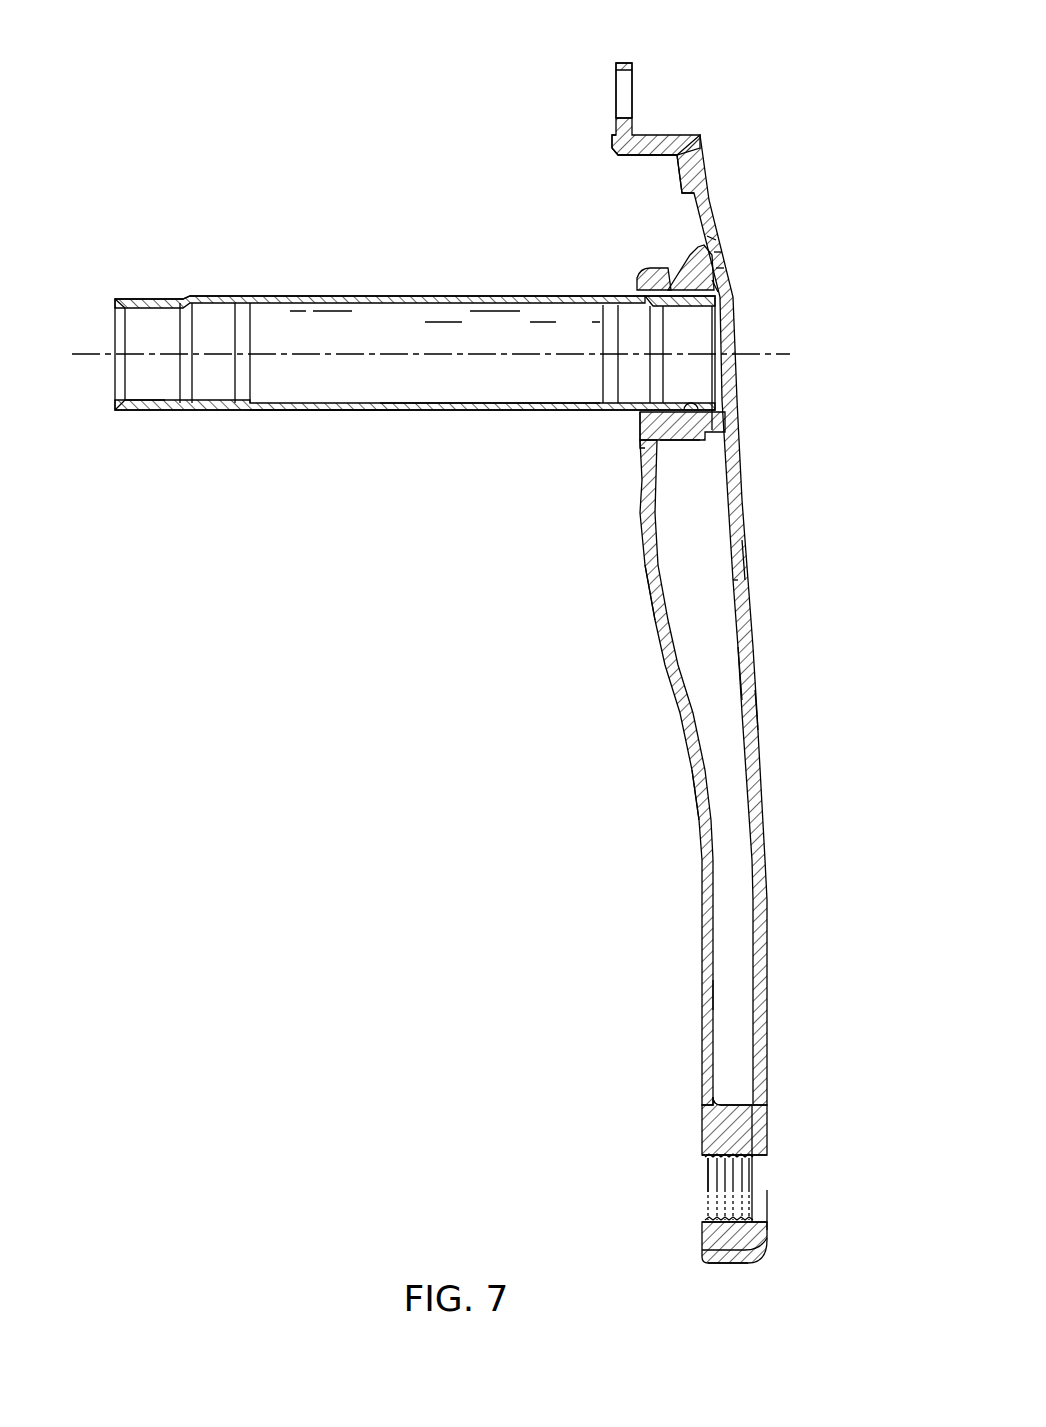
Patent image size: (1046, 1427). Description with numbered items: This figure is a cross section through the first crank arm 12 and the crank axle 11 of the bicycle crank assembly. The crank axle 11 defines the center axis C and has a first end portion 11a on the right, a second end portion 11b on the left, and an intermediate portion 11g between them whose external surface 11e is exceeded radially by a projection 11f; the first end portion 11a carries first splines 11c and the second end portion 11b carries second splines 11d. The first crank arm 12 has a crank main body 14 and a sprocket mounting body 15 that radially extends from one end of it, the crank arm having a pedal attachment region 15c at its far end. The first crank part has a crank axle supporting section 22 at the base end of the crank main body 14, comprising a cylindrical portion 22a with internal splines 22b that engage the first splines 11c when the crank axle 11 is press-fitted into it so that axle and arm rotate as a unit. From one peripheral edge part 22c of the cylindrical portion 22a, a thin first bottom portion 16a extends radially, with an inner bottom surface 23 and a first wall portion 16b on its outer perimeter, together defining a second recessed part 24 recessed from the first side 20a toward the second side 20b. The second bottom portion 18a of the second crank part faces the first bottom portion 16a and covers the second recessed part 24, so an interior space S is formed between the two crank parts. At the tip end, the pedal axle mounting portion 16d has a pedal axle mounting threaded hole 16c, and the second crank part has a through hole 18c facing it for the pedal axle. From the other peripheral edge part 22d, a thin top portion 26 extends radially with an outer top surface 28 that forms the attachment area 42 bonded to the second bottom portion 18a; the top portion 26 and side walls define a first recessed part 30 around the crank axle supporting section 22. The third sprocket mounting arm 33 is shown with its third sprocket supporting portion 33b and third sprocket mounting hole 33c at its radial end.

The crank axle 11 is at (385, 287).
The first end portion 11a is at (682, 268).
The second end portion 11b is at (138, 288).
The first splines 11c is at (646, 446).
The second splines 11d is at (165, 412).
The external surface 11e is at (398, 413).
The projection 11f is at (726, 421).
The intermediate portion 11g is at (315, 414).
The first crank arm 12 is at (690, 83).
The crank main body 14 is at (785, 829).
The sprocket mounting body 15 is at (768, 325).
The pedal attachment portion 15c is at (602, 93).
The first bottom portion 16a is at (686, 766).
The first wall portion 16b is at (710, 652).
The pedal axle mounting threaded hole 16c is at (714, 1218).
The pedal axle mounting portion 16d is at (698, 1242).
The second bottom portion 18a is at (749, 521).
The through hole 18c is at (760, 1210).
The first side 20a is at (768, 709).
The second side 20b is at (642, 687).
The crank axle supporting section 22 is at (705, 444).
The cylindrical portion 22a is at (652, 268).
The internal splines 22b is at (672, 442).
The peripheral edge part 22c is at (632, 420).
The peripheral edge part 22d is at (726, 282).
The inner bottom surface 23 is at (716, 999).
The second recessed part 24 is at (735, 1082).
The top portion 26 is at (720, 238).
The outer top surface 28 is at (722, 252).
The first recessed part 30 is at (642, 200).
The third sprocket mounting arm 33 is at (624, 58).
The third sprocket supporting portion 33b is at (648, 133).
The third sprocket mounting hole 33c is at (628, 88).
The attachment area 42 is at (726, 268).
The center axis C is at (92, 360).
The interior space S is at (700, 580).